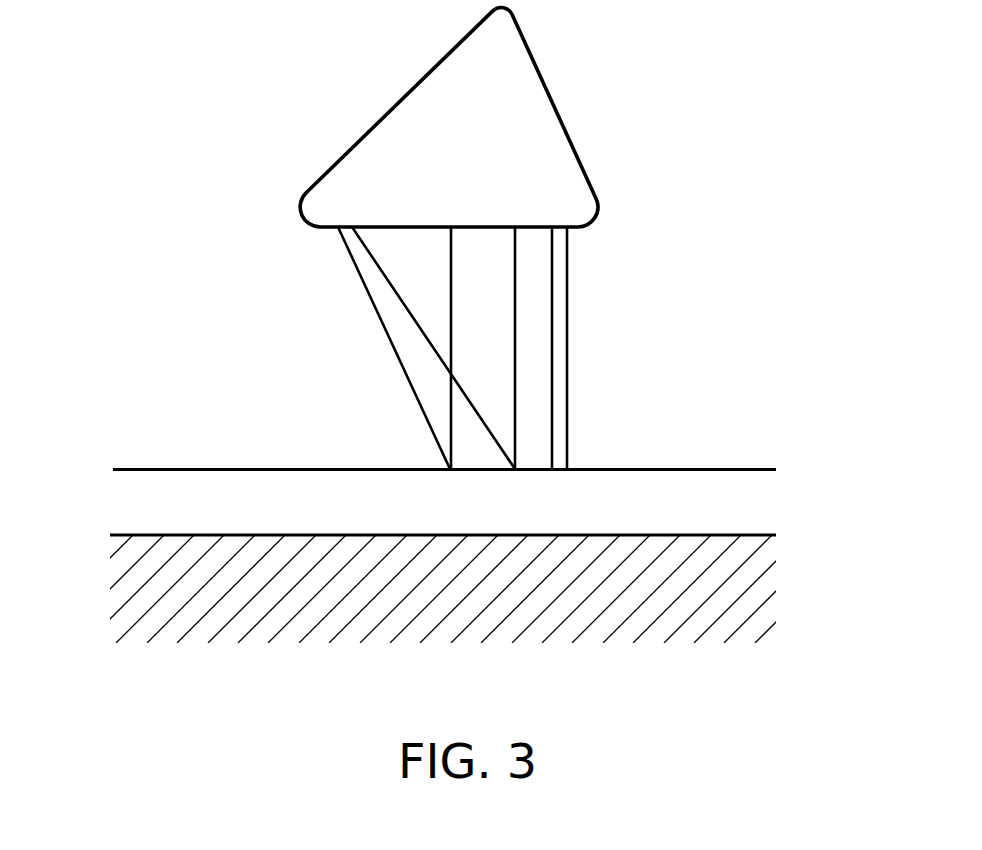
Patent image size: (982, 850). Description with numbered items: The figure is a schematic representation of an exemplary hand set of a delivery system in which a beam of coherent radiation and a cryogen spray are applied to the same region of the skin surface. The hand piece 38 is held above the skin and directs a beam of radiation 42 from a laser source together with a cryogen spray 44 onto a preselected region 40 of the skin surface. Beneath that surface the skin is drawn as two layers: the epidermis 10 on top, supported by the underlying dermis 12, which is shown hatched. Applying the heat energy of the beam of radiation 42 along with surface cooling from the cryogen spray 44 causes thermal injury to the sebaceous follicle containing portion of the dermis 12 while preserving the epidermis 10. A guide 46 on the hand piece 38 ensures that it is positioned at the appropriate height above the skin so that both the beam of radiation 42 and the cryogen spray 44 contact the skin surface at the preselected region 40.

The epidermis 10 is at (115, 507).
The dermis 12 is at (135, 643).
The hand piece 38 is at (540, 70).
The preselected region 40 is at (482, 472).
The beam of radiation 42 is at (502, 342).
The cryogen spray 44 is at (405, 328).
The guide 46 is at (570, 255).